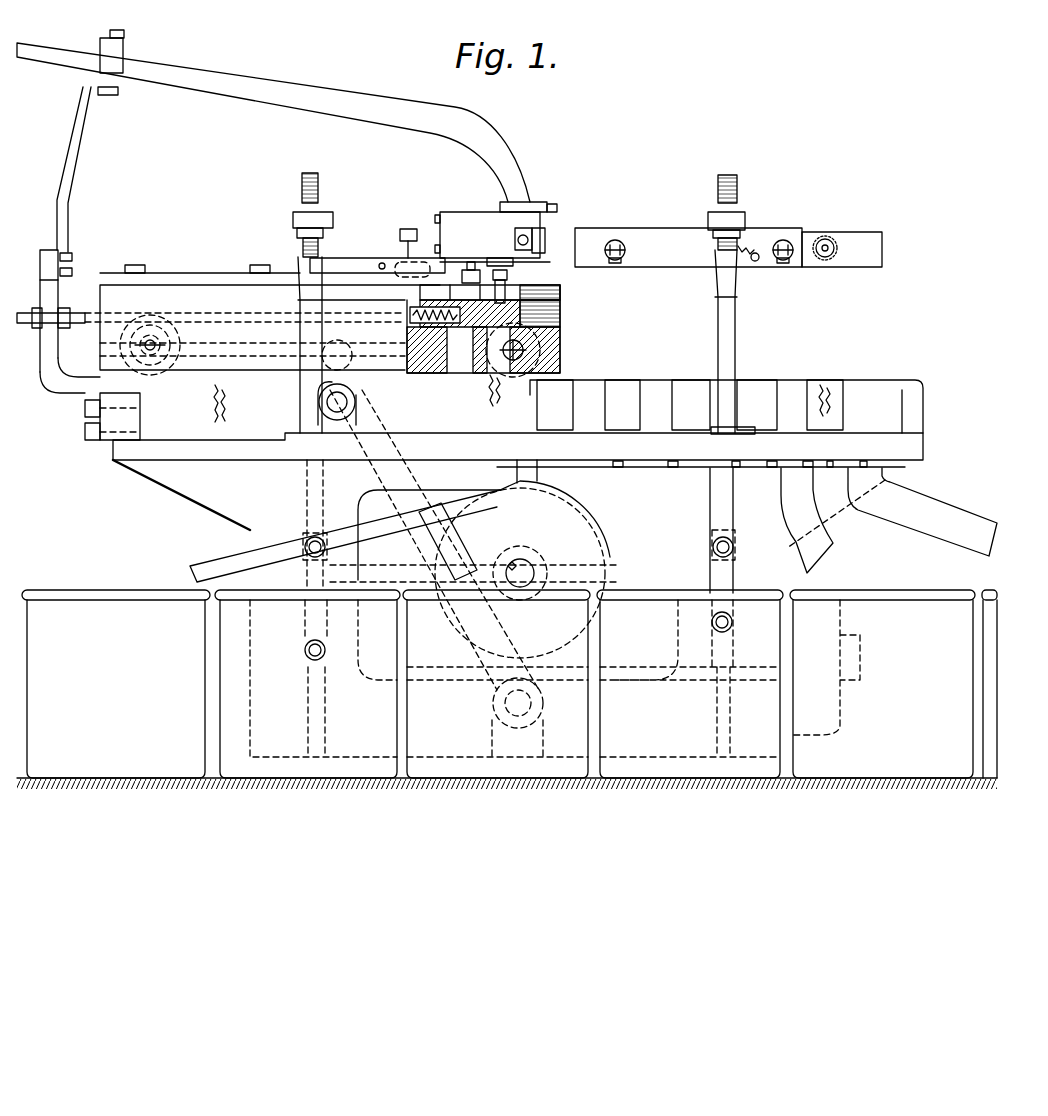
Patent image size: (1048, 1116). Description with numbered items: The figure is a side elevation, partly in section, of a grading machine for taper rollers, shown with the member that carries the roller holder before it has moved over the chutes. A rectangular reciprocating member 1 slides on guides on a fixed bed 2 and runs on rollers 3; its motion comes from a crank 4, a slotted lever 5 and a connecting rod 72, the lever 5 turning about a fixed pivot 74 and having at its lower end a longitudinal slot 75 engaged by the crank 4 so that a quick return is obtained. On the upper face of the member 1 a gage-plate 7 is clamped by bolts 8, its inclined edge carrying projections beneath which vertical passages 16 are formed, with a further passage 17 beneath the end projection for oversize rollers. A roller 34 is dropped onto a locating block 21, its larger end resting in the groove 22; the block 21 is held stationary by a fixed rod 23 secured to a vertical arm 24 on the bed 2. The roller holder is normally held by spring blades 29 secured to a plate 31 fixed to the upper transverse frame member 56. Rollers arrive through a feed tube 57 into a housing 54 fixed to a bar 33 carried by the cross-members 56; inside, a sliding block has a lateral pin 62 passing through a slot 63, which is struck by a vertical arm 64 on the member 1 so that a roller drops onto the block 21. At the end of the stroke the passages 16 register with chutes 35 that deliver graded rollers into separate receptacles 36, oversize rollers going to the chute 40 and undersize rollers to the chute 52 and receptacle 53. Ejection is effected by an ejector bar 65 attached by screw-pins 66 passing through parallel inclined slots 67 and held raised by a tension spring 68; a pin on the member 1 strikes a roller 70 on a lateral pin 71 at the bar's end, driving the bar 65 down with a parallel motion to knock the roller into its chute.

The reciprocating member 1 is at (182, 290).
The bed 2 is at (170, 455).
The rollers 3 is at (153, 377).
The crank 4 is at (468, 622).
The slotted lever 5 is at (408, 500).
The gage-plate 7 is at (437, 289).
The bolts 8 is at (467, 270).
The vertical passage 16 is at (460, 367).
The vertical passage 17 is at (560, 360).
The locating block 21 is at (560, 314).
The groove 22 is at (560, 294).
The fixed rod 23 is at (86, 305).
The vertical arm 24 is at (52, 383).
The spring blades 29 is at (423, 262).
The plate 31 is at (335, 267).
The bar 33 is at (655, 228).
The roller 34 is at (513, 283).
The chutes 35 is at (683, 388).
The receptacle 36 is at (228, 670).
The chute 40 is at (925, 500).
The chute 52 is at (235, 558).
The receptacle 53 is at (117, 600).
The housing 54 is at (527, 217).
The transverse frame member 56 is at (745, 220).
The feed tube 57 is at (229, 75).
The pin 62 is at (513, 238).
The slot 63 is at (500, 210).
The vertical arm 64 is at (544, 230).
The ejector bar 65 is at (875, 247).
The screw-pins 66 is at (622, 260).
The inclined slots 67 is at (617, 240).
The tension spring 68 is at (752, 262).
The roller 70 is at (836, 238).
The lateral pin 71 is at (838, 258).
The connecting rod 72 is at (236, 343).
The fixed pivot 74 is at (510, 710).
The longitudinal slot 75 is at (445, 585).